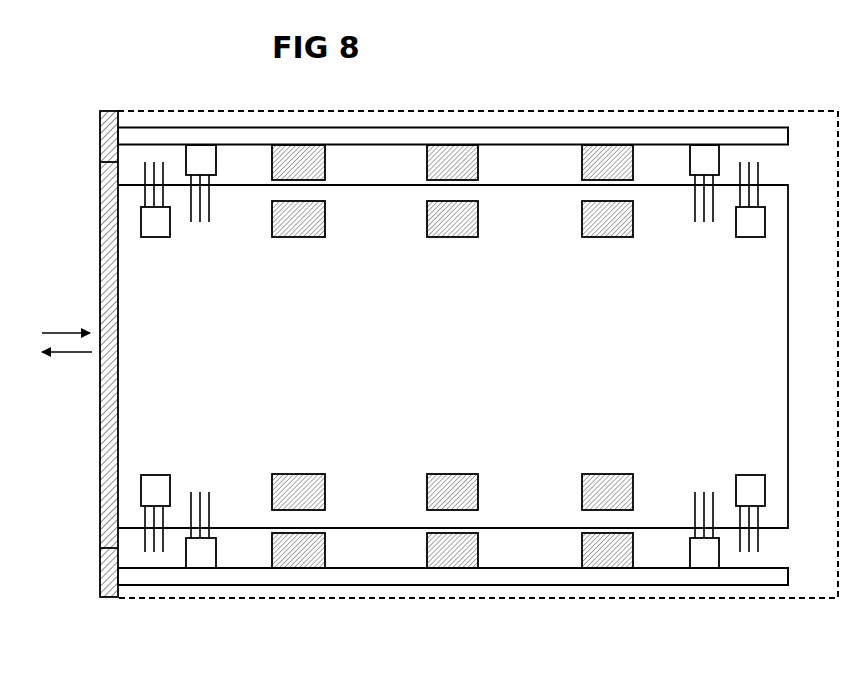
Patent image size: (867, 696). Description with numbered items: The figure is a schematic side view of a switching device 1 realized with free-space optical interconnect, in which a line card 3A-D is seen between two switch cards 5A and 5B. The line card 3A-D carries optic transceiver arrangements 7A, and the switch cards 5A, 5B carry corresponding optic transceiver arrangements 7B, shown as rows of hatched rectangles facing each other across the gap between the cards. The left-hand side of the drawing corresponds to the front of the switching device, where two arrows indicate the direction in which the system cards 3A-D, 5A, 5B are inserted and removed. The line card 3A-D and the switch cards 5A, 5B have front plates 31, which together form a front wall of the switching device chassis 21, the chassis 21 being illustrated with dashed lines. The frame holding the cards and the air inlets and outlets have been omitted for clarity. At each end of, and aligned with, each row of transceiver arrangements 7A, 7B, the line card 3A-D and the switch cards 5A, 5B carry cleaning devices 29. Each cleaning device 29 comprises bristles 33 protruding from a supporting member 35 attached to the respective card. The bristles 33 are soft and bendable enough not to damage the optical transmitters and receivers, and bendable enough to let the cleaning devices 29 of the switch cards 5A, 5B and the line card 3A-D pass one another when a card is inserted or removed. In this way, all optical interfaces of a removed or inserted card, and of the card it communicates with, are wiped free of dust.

The battery module assembly 1 is at (745, 64).
The line card 3A-D is at (477, 356).
The switch card 5A is at (453, 101).
The switch card 5B is at (453, 610).
The optic transceiver arrangements 7A is at (464, 355).
The optic transceiver arrangements 7B is at (452, 307).
The switching device chassis 21 is at (478, 391).
The cleaning devices 29 is at (198, 478).
The front plates 31 is at (77, 350).
The bristles 33 is at (482, 357).
The supporting members 35 is at (453, 356).